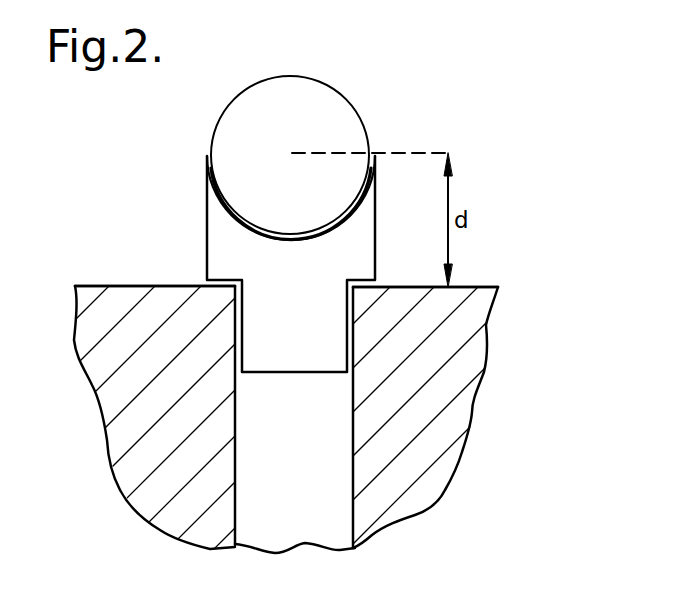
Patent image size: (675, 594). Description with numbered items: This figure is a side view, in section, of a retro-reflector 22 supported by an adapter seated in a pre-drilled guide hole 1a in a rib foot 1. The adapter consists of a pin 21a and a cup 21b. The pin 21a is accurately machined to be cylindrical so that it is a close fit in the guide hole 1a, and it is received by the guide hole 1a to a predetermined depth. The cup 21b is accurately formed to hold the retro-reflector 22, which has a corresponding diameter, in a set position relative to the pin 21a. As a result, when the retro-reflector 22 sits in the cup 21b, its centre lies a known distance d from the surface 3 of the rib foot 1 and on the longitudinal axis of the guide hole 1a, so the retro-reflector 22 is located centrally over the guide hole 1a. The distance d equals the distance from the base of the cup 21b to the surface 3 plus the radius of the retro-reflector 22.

The rib foot 1 is at (108, 361).
The guide hole 1a is at (236, 442).
The surface of the rib foot 3 is at (118, 285).
The pin 21a is at (271, 300).
The cup 21b is at (220, 215).
The retro-reflector 22 is at (240, 126).